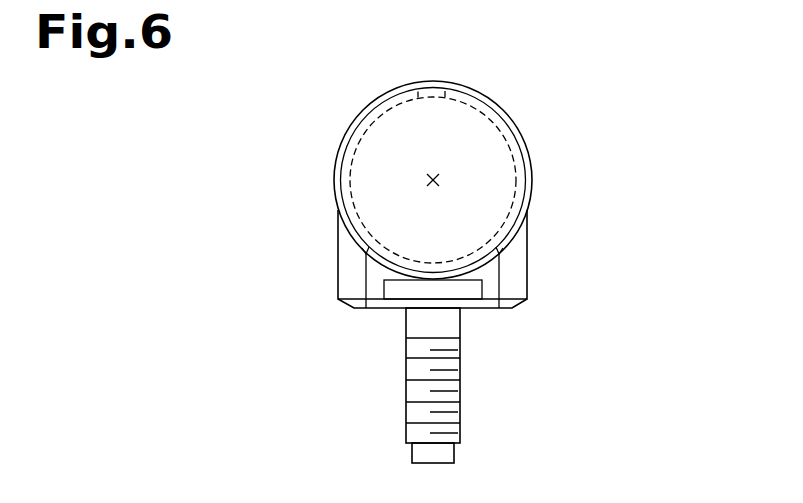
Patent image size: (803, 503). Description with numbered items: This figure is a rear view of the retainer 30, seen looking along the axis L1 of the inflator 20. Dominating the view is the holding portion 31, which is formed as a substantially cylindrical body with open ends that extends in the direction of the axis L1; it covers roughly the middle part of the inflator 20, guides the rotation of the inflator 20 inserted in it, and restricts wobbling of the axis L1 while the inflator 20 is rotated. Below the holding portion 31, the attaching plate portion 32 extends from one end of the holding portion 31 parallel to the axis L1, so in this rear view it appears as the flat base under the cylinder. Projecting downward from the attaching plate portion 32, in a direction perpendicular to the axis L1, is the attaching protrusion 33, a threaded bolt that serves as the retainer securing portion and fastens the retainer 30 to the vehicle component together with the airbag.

The inflator 20 is at (508, 127).
The retainer 30 is at (413, 190).
The holding portion 31 is at (346, 137).
The attaching plate portion 32 is at (492, 306).
The attaching protrusion 33 is at (406, 388).
The axis L1 is at (440, 178).